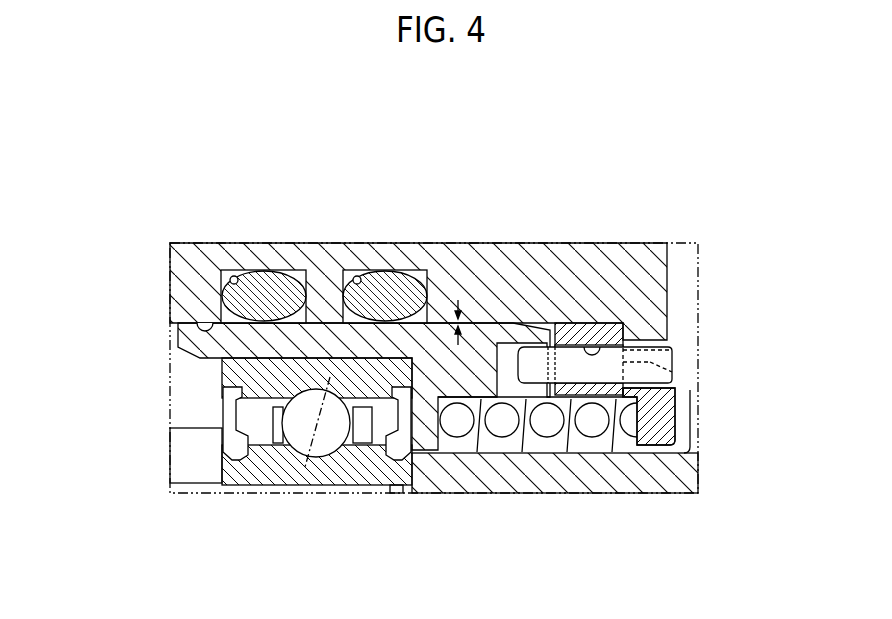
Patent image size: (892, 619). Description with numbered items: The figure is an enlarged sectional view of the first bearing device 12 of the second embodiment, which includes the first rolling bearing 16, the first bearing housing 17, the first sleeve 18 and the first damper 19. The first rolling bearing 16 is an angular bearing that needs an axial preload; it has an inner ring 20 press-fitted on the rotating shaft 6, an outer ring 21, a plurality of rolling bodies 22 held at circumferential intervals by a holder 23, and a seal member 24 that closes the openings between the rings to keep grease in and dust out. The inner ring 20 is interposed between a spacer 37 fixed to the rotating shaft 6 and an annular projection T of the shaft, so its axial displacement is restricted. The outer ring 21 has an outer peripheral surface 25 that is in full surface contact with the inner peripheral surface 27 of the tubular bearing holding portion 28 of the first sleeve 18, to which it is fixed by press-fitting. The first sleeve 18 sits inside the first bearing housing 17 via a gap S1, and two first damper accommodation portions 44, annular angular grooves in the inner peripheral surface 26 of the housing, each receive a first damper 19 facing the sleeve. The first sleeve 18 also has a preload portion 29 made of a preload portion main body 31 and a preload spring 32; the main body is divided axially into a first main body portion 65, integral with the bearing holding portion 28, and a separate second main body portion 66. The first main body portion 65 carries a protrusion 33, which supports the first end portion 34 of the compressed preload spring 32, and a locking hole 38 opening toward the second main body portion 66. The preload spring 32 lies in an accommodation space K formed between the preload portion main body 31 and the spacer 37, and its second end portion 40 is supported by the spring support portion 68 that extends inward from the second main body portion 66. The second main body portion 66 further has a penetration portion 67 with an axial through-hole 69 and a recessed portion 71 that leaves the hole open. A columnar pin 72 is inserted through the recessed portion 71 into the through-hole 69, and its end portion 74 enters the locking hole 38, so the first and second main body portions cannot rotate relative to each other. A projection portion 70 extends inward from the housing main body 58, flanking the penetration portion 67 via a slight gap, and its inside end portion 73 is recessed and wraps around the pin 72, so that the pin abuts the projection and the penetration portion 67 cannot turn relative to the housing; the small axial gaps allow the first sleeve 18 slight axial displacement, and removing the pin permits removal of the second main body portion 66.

The first bearing device 12 is at (332, 194).
The first bearing housing 17 is at (570, 243).
The housing main body 58 is at (442, 263).
The projection portion 70 is at (667, 340).
The first damper 19 is at (264, 288).
The first damper accommodation portion 44 is at (234, 276).
The protrusion 33 is at (433, 440).
The preload portion 29 is at (538, 322).
The bearing holding portion 28 is at (320, 322).
The outer peripheral surface 25 is at (233, 342).
The inner peripheral surface 26 is at (200, 322).
The first sleeve 18 is at (177, 333).
The gap S1 is at (455, 312).
The locking hole 38 is at (500, 343).
The first end portion 34 is at (423, 442).
The outer ring 21 is at (233, 377).
The inner ring 20 is at (240, 485).
The annular projection T is at (188, 457).
The rotating shaft 6 is at (263, 493).
The first rolling bearing 16 is at (317, 493).
The inner peripheral surface 27 is at (233, 392).
The seal member 24 is at (233, 415).
The holder 23 is at (364, 440).
The rolling body 22 is at (302, 437).
The spacer 37 is at (625, 480).
The preload spring 32 is at (499, 432).
The end portion 74 is at (566, 415).
The accommodation space K is at (575, 452).
The spring support portion 68 is at (668, 417).
The second end portion 40 is at (640, 420).
The penetration portion 67 is at (615, 325).
The preload portion main body 31 is at (581, 267).
The first main body portion 65 is at (519, 360).
The second main body portion 66 is at (587, 323).
The through-hole 69 is at (600, 347).
The pin 72 is at (655, 356).
The inside end portion 73 is at (673, 372).
The recessed portion 71 is at (660, 380).